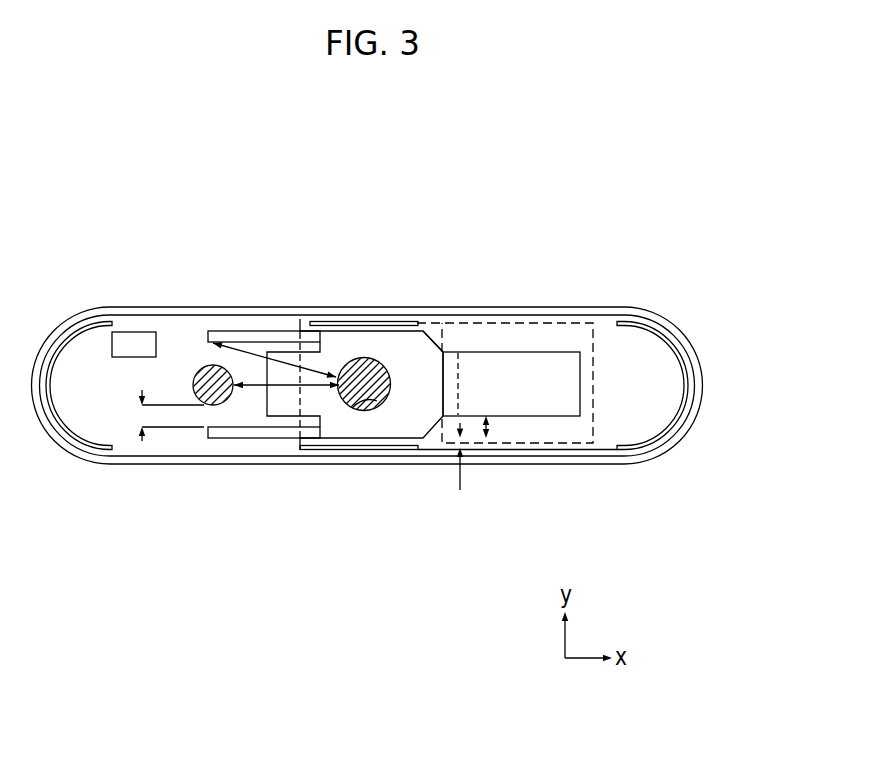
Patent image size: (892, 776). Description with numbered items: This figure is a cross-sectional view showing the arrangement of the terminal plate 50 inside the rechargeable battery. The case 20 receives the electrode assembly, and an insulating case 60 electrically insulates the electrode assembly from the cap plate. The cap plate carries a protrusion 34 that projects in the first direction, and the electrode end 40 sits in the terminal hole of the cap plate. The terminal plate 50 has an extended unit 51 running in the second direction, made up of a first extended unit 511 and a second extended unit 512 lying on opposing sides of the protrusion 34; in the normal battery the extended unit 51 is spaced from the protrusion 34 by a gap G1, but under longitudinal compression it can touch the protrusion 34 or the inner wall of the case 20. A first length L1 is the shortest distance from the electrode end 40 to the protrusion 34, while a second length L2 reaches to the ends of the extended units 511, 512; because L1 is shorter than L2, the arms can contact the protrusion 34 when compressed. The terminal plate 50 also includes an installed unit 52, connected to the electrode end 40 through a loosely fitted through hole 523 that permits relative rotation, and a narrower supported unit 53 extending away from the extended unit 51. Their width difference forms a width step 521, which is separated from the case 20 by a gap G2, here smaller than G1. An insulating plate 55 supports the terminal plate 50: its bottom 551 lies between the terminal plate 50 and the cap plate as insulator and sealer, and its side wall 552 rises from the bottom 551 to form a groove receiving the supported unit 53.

The case 20 is at (608, 449).
The protrusion 34 is at (211, 379).
The electrode end 40 is at (367, 368).
The terminal plate 50 is at (495, 373).
The extended unit 51 is at (243, 451).
The first extended unit 511 is at (218, 432).
The second extended unit 512 is at (249, 333).
The installed unit 52 is at (397, 423).
The width step 521 is at (430, 333).
The through hole 523 is at (370, 408).
The supported unit 53 is at (551, 393).
The insulating plate 55 is at (435, 333).
The bottom 551 is at (300, 325).
The side wall 552 is at (530, 337).
The insulating case 60 is at (640, 352).
The first length L1 is at (300, 450).
The second length L2 is at (280, 357).
The gap G1 is at (157, 415).
The gap G2 is at (473, 458).